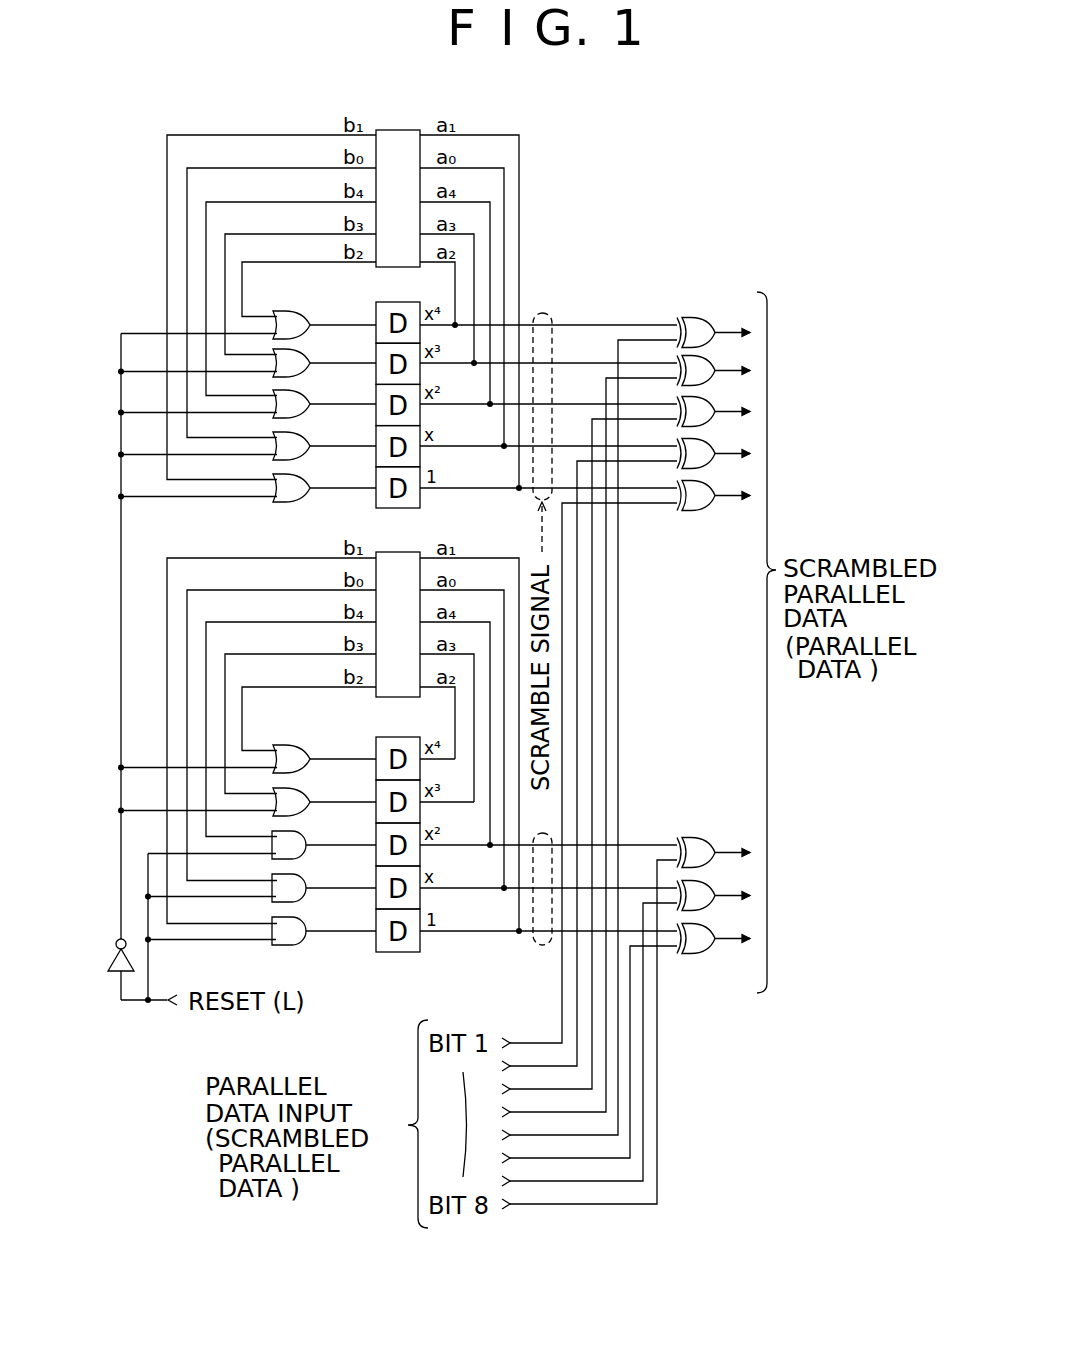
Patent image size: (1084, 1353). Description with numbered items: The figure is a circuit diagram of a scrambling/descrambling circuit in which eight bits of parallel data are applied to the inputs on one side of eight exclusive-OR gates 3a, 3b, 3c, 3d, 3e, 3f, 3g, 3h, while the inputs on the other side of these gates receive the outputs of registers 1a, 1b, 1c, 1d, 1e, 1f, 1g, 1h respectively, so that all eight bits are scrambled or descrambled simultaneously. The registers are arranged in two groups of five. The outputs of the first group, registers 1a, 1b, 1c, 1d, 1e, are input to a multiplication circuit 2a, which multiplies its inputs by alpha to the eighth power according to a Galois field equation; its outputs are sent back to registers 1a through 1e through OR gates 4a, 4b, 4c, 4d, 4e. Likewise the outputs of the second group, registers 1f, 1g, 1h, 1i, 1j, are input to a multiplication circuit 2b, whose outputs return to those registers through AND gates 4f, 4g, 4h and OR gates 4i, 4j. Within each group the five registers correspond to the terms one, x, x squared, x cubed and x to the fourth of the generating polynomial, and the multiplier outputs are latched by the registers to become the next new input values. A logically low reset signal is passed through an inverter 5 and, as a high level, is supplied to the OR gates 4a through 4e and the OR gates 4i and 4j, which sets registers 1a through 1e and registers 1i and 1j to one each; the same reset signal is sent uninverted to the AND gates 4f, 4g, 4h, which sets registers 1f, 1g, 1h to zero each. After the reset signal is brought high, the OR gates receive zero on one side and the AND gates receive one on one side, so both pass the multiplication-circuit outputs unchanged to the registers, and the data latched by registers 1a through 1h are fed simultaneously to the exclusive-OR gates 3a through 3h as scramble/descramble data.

The multiplication circuit 2a is at (405, 130).
The multiplication circuit 2b is at (403, 552).
The register 1a is at (376, 486).
The register 1b is at (376, 444).
The register 1c is at (376, 402).
The register 1d is at (376, 360).
The register 1e is at (376, 304).
The register 1f is at (376, 928).
The register 1g is at (376, 885).
The register 1h is at (376, 842).
The register 1i is at (376, 799).
The register 1j is at (376, 742).
The OR gate 4a is at (298, 478).
The OR gate 4b is at (298, 436).
The OR gate 4c is at (298, 394).
The OR gate 4d is at (298, 353).
The OR gate 4e is at (289, 311).
The AND gate 4f is at (298, 920).
The AND gate 4g is at (298, 877).
The AND gate 4h is at (298, 834).
The OR gate 4i is at (298, 791).
The OR gate 4j is at (290, 745).
The exclusive-OR gate 3a is at (709, 485).
The exclusive-OR gate 3b is at (709, 443).
The exclusive-OR gate 3c is at (709, 402).
The exclusive-OR gate 3d is at (709, 360).
The exclusive-OR gate 3e is at (688, 317).
The exclusive-OR gate 3f is at (708, 926).
The exclusive-OR gate 3g is at (708, 882).
The exclusive-OR gate 3h is at (707, 837).
The inverter 5 is at (115, 940).